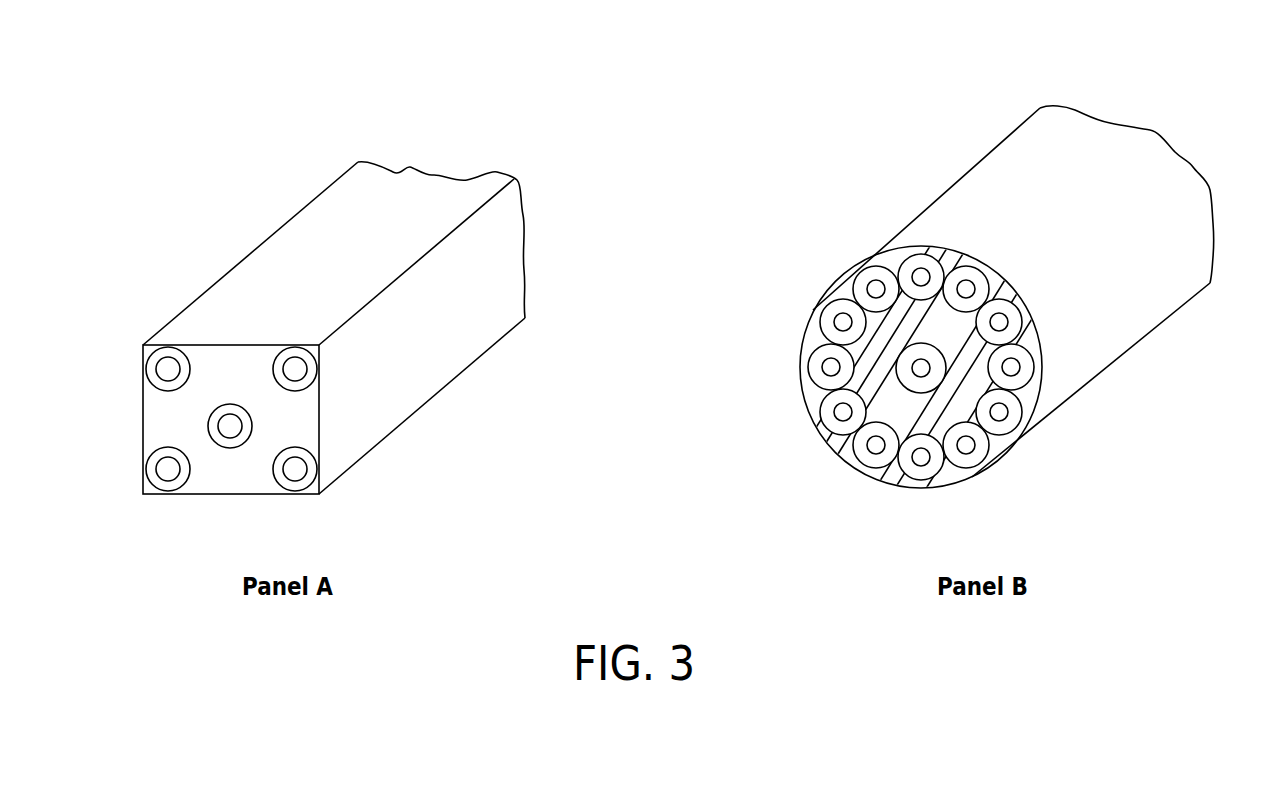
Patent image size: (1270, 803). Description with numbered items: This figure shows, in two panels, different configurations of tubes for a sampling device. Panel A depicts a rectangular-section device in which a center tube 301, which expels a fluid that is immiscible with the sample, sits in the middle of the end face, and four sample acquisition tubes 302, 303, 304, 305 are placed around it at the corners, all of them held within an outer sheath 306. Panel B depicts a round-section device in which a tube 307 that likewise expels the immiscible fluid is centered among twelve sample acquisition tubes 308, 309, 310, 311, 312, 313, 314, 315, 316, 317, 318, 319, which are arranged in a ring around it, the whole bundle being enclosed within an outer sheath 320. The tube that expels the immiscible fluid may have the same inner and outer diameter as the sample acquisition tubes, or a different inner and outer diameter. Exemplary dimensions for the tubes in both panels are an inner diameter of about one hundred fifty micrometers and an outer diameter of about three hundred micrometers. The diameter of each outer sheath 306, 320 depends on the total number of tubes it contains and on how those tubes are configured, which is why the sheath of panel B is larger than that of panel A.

The center tube 301 is at (231, 403).
The sample acquisition tube 302 is at (153, 386).
The sample acquisition tube 303 is at (317, 390).
The sample acquisition tube 304 is at (184, 488).
The sample acquisition tube 305 is at (280, 488).
The outer sheath 306 is at (447, 372).
The tube 307 is at (896, 360).
The sample acquisition tube 308 is at (923, 253).
The sample acquisition tube 309 is at (969, 266).
The sample acquisition tube 310 is at (1012, 304).
The sample acquisition tube 311 is at (1030, 348).
The sample acquisition tube 312 is at (1024, 412).
The sample acquisition tube 313 is at (968, 470).
The sample acquisition tube 314 is at (921, 482).
The sample acquisition tube 315 is at (874, 470).
The sample acquisition tube 316 is at (822, 430).
The sample acquisition tube 317 is at (806, 371).
The sample acquisition tube 318 is at (820, 309).
The sample acquisition tube 319 is at (878, 263).
The outer sheath 320 is at (1167, 303).